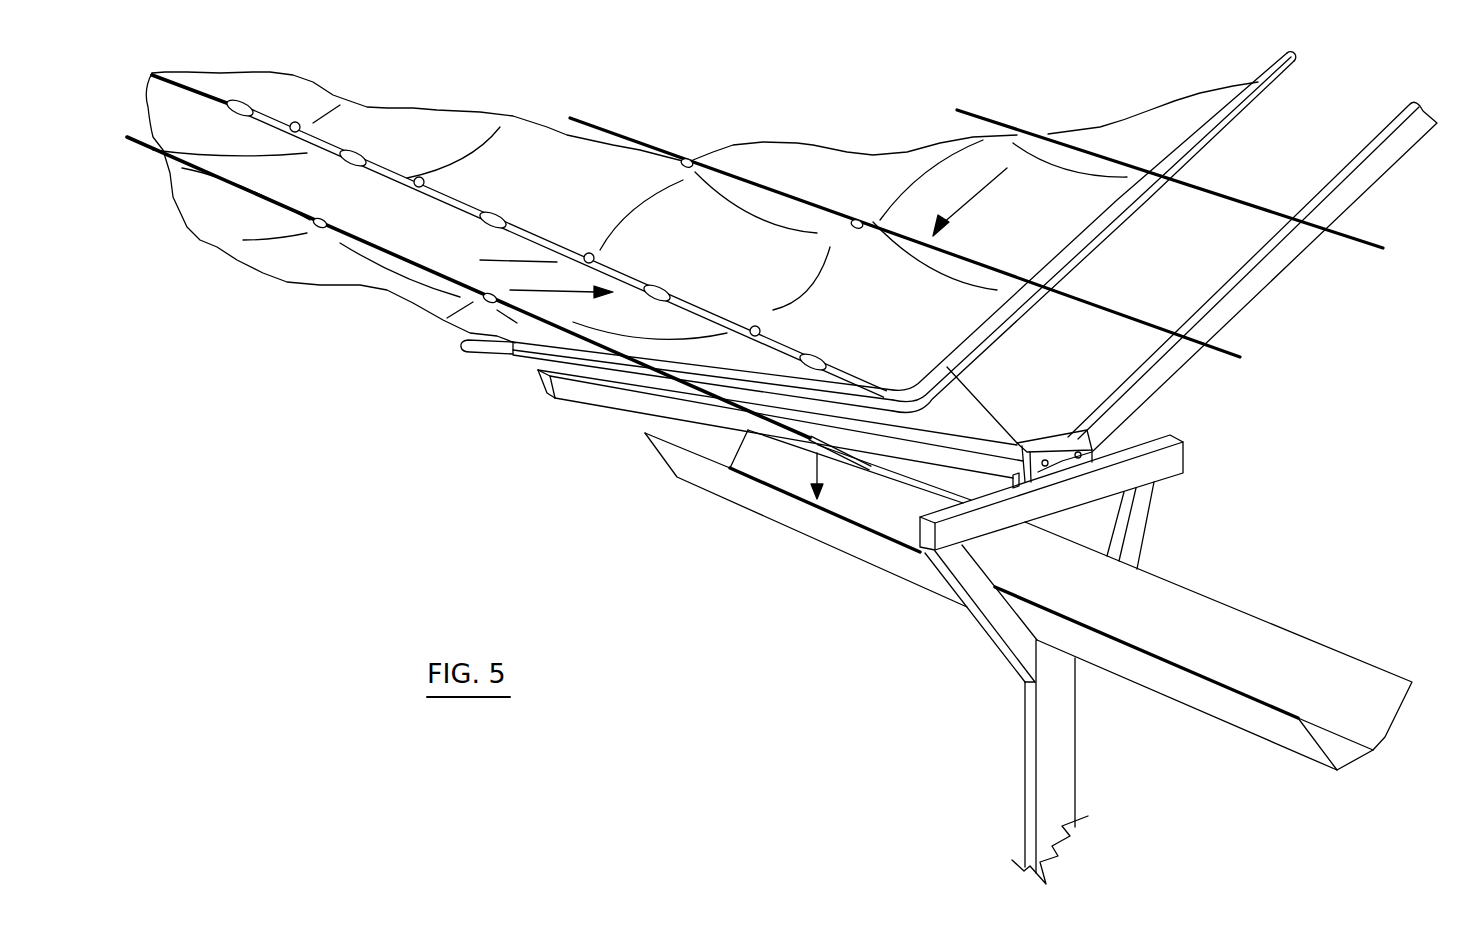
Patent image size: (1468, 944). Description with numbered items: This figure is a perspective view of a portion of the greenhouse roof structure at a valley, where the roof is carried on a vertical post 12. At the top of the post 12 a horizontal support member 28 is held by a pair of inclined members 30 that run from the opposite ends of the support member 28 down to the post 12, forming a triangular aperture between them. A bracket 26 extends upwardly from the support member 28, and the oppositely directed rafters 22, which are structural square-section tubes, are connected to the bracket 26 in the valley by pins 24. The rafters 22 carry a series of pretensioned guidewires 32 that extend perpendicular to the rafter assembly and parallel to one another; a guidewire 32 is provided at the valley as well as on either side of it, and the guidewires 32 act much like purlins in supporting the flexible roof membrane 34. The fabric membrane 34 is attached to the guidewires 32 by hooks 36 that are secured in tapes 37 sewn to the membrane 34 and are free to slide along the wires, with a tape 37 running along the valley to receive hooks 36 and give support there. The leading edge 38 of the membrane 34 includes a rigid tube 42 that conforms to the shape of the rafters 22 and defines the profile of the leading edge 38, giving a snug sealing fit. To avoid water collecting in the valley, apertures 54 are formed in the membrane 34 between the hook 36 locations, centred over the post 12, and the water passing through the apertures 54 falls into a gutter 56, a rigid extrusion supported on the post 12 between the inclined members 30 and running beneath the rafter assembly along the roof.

The post 12 is at (1071, 748).
The rafter 22 is at (590, 398).
The pin 24 is at (1076, 452).
The bracket 26 is at (1082, 461).
The horizontal support member 28 is at (1122, 473).
The inclined member 30 is at (1141, 535).
The guidewire 32 is at (1103, 308).
The roof membrane 34 is at (430, 133).
The hook 36 is at (492, 295).
The tape 37 is at (703, 376).
The leading edge 38 is at (977, 367).
The rigid tube 42 is at (483, 352).
The aperture 54 is at (403, 184).
The gutter 56 is at (747, 497).